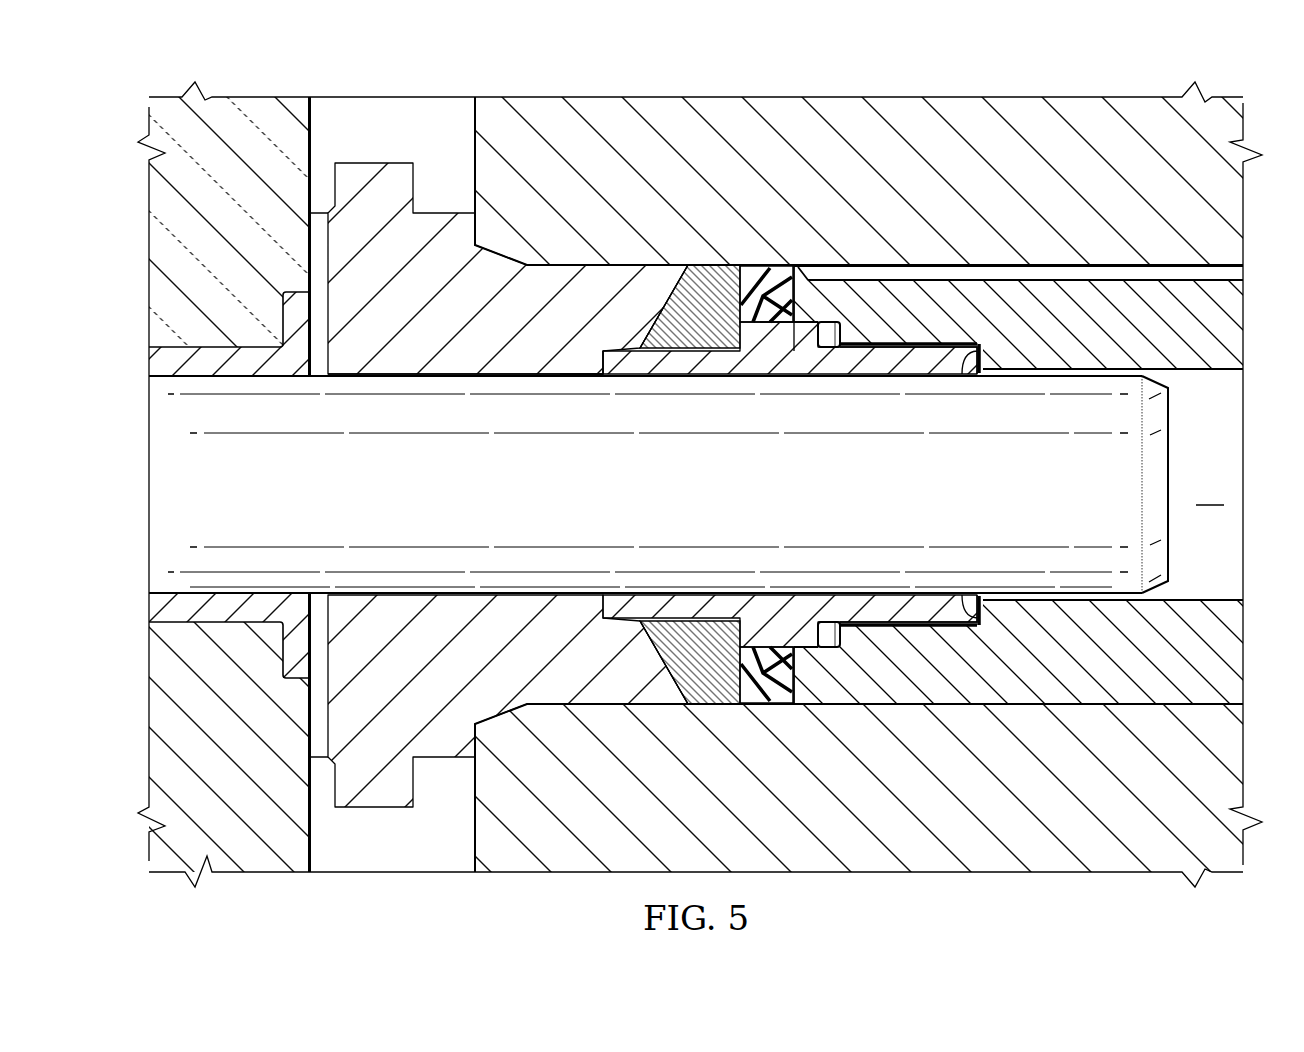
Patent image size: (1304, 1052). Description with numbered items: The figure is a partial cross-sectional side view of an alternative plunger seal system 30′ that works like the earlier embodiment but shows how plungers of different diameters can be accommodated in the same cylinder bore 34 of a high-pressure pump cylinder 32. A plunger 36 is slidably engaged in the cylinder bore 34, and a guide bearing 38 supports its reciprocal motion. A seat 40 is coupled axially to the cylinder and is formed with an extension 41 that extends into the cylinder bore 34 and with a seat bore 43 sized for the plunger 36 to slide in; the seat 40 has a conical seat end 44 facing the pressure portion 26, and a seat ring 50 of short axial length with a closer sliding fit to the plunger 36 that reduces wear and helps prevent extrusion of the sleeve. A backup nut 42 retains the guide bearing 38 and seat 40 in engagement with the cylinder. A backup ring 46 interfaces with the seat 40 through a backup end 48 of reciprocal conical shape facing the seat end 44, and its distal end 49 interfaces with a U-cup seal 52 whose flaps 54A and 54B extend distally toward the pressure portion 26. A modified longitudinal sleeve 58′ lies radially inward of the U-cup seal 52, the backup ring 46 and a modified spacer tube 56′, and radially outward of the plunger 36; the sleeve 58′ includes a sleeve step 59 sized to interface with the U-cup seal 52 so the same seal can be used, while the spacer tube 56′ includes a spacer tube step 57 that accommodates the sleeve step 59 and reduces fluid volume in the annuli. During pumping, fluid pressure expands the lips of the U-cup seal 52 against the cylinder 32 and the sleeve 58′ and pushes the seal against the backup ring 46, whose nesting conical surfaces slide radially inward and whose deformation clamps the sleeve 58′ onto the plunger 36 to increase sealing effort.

The plunger seal system 30′ is at (648, 70).
The pressure portion 26 is at (687, 484).
The high-pressure pump cylinder 32 is at (957, 102).
The cylinder bore 34 is at (1243, 692).
The plunger 36 is at (1172, 445).
The guide bearing 38 is at (222, 348).
The seat 40 is at (362, 165).
The extension 41 is at (596, 268).
The backup nut 42 is at (256, 100).
The seat bore 43 is at (438, 375).
The seat end 44 is at (656, 640).
The backup ring 46 is at (711, 270).
The backup end 48 is at (686, 272).
The distal end 49 is at (746, 334).
The seat ring 50 is at (586, 377).
The U-cup seal 52 is at (762, 270).
The flap 54A is at (810, 266).
The flap 54B is at (803, 322).
The spacer tube 56′ is at (1003, 288).
The spacer tube step 57 is at (845, 340).
The sleeve 58′ is at (895, 370).
The sleeve step 59 is at (786, 334).